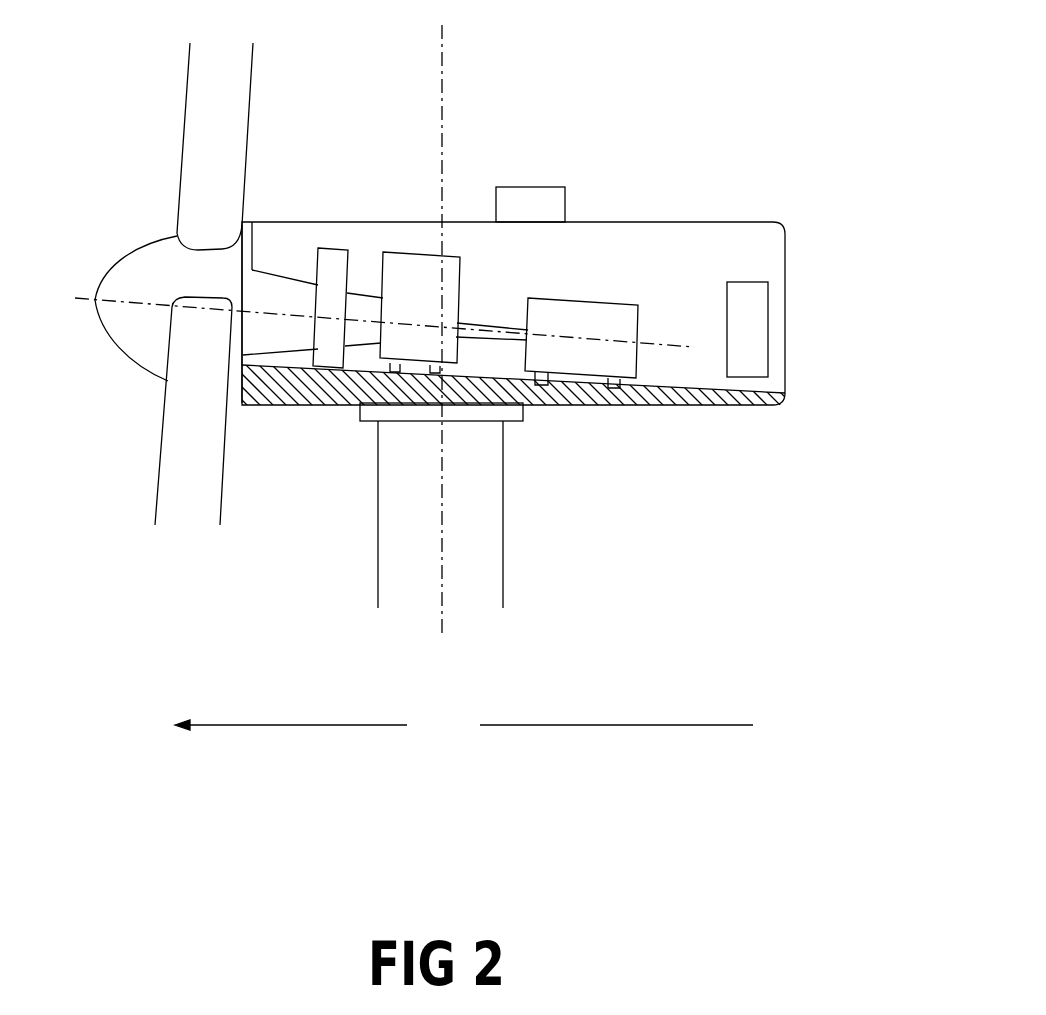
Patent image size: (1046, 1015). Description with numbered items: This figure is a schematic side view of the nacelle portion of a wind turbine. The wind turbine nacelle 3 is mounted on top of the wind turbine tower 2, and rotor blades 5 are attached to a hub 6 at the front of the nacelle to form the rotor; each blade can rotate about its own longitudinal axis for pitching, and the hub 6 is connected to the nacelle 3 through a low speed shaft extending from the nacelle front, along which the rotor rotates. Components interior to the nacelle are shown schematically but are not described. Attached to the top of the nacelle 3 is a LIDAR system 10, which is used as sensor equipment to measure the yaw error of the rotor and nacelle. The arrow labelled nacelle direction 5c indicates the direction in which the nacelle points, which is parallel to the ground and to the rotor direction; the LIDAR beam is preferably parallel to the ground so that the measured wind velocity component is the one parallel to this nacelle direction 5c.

The wind turbine tower 2 is at (480, 533).
The wind turbine nacelle 3 is at (683, 220).
The rotor blade 5 is at (190, 377).
The nacelle direction 5c is at (464, 731).
The hub 6 is at (152, 277).
The LIDAR system 10 is at (525, 202).